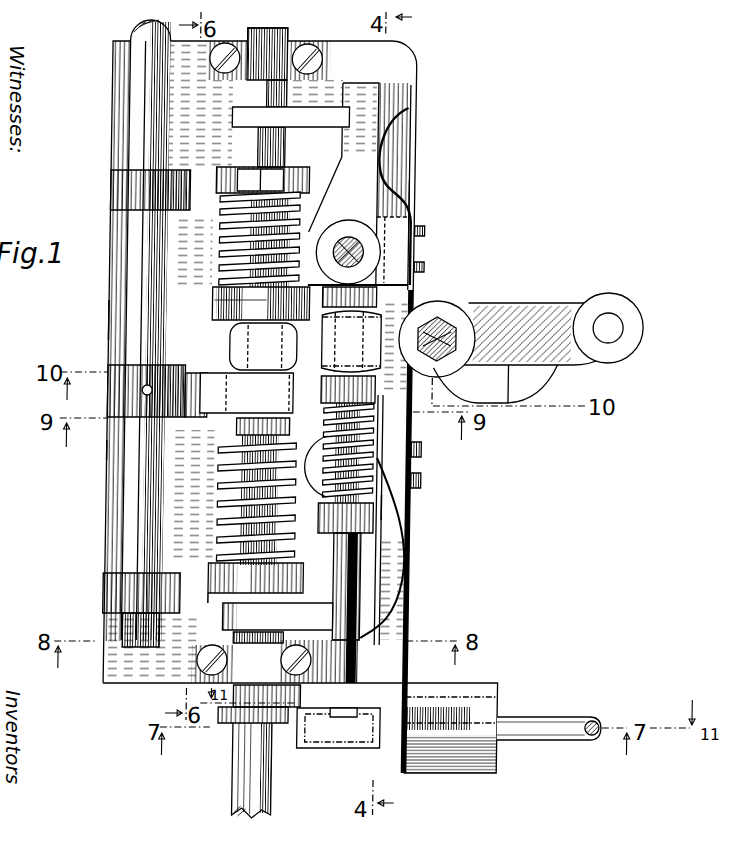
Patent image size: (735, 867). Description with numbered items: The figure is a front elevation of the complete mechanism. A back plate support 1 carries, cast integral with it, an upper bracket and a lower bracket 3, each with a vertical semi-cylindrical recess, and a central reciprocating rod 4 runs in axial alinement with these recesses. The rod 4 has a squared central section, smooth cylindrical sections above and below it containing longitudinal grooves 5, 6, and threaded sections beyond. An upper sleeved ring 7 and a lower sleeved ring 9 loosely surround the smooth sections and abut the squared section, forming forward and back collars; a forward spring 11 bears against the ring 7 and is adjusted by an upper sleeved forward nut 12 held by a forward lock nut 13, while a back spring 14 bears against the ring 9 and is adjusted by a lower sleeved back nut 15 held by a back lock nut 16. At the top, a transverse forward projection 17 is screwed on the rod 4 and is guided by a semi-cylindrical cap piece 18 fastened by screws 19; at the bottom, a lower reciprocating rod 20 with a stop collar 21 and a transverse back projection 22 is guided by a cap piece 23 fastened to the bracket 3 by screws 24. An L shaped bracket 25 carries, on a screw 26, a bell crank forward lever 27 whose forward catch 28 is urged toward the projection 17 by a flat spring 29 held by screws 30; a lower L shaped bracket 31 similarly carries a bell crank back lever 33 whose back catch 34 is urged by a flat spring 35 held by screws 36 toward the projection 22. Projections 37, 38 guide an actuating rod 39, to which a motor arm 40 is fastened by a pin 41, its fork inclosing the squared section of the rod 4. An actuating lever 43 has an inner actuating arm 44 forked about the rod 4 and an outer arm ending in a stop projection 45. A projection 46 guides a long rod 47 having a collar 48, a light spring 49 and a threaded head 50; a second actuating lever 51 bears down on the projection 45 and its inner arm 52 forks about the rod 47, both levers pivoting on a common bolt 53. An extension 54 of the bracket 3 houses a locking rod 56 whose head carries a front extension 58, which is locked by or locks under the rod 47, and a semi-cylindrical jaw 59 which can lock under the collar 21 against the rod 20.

The back plate support 1 is at (112, 72).
The bracket 3 is at (388, 662).
The central reciprocating rod 4 is at (108, 316).
The longitudinal groove 5 is at (222, 264).
The longitudinal groove 6 is at (226, 466).
The upper sleeved ring 7 is at (214, 301).
The lower sleeved ring 9 is at (70, 458).
The helical compression spring 11 is at (222, 236).
The upper sleeved forward nut 12 is at (217, 165).
The forward lock nut 13 is at (228, 180).
The helical compression spring 14 is at (222, 484).
The lower sleeved back nut 15 is at (212, 568).
The back lock nut 16 is at (215, 591).
The transverse forward projection 17 is at (333, 117).
The semi-cylindrical cap piece 18 is at (304, 62).
The screws 19 is at (214, 60).
The lower reciprocating rod 20 is at (244, 777).
The stop collar 21 is at (236, 718).
The transverse back projection 22 is at (277, 616).
The semi-cylindrical cap piece 23 is at (258, 673).
The screws 24 is at (290, 668).
The L shaped bracket 25 is at (416, 221).
The screw 26 is at (362, 252).
The bell crank forward lever 27 is at (415, 190).
The forward catch 28 is at (364, 88).
The light flat spring 29 is at (396, 160).
The screws 30 is at (425, 268).
The L shaped bracket 31 is at (372, 480).
The bell crank back lever 33 is at (376, 537).
The back catch 34 is at (396, 624).
The light flat spring 35 is at (397, 593).
The screws 36 is at (424, 450).
The projection 37 is at (128, 191).
The projection 38 is at (128, 594).
The actuating rod 39 is at (148, 102).
The motor arm 40 is at (200, 391).
The pin 41 is at (145, 387).
The actuating lever 43 is at (384, 326).
The inner actuating arm 44 is at (263, 346).
The stop projection 45 is at (543, 374).
The projection 46 is at (344, 433).
The rod 47 is at (402, 568).
The collar 48 is at (383, 508).
The light helical compression spring 49 is at (386, 501).
The head 50 is at (420, 284).
The actuating lever 51 is at (628, 309).
The inner arm 52 is at (452, 316).
The bolt 53 is at (492, 308).
The extension 54 is at (468, 770).
The locking rod 56 is at (535, 728).
The extension 58 is at (376, 719).
The semi-cylindrical jaw 59 is at (300, 745).